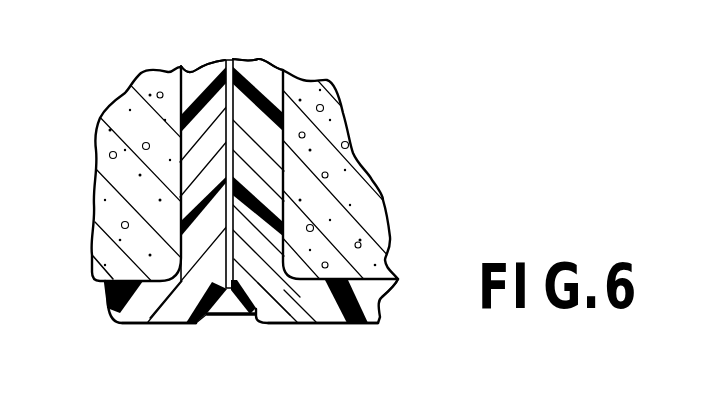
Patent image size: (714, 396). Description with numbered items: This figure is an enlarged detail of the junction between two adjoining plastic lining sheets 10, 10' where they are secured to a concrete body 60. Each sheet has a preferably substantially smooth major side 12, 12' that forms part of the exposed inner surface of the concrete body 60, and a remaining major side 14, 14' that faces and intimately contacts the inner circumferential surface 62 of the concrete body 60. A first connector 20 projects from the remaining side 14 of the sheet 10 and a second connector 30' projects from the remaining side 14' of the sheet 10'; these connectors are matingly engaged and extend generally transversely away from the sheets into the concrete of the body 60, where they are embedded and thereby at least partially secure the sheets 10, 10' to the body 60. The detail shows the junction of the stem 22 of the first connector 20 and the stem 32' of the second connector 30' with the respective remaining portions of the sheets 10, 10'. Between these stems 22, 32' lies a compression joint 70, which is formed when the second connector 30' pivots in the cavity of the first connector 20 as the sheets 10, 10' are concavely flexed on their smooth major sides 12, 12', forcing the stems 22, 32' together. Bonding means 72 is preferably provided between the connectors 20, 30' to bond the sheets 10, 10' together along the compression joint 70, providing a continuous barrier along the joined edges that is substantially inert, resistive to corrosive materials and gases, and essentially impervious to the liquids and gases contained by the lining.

The synthetic polymeric plastic sheet 10 is at (122, 302).
The adjoining plastic sheet 10' is at (357, 309).
The smooth major side 12 is at (157, 345).
The smooth major side 12' is at (330, 344).
The remaining major side 14 is at (94, 283).
The remaining major side 14' is at (384, 260).
The first connector 20 is at (178, 66).
The stem 22 is at (197, 71).
The second connector 30' is at (292, 177).
The stem 32' is at (275, 41).
The concrete body 60 is at (102, 106).
The inner circumferential surface 62 is at (93, 279).
The compression joint 70 is at (222, 233).
The bonding means 72 is at (226, 60).